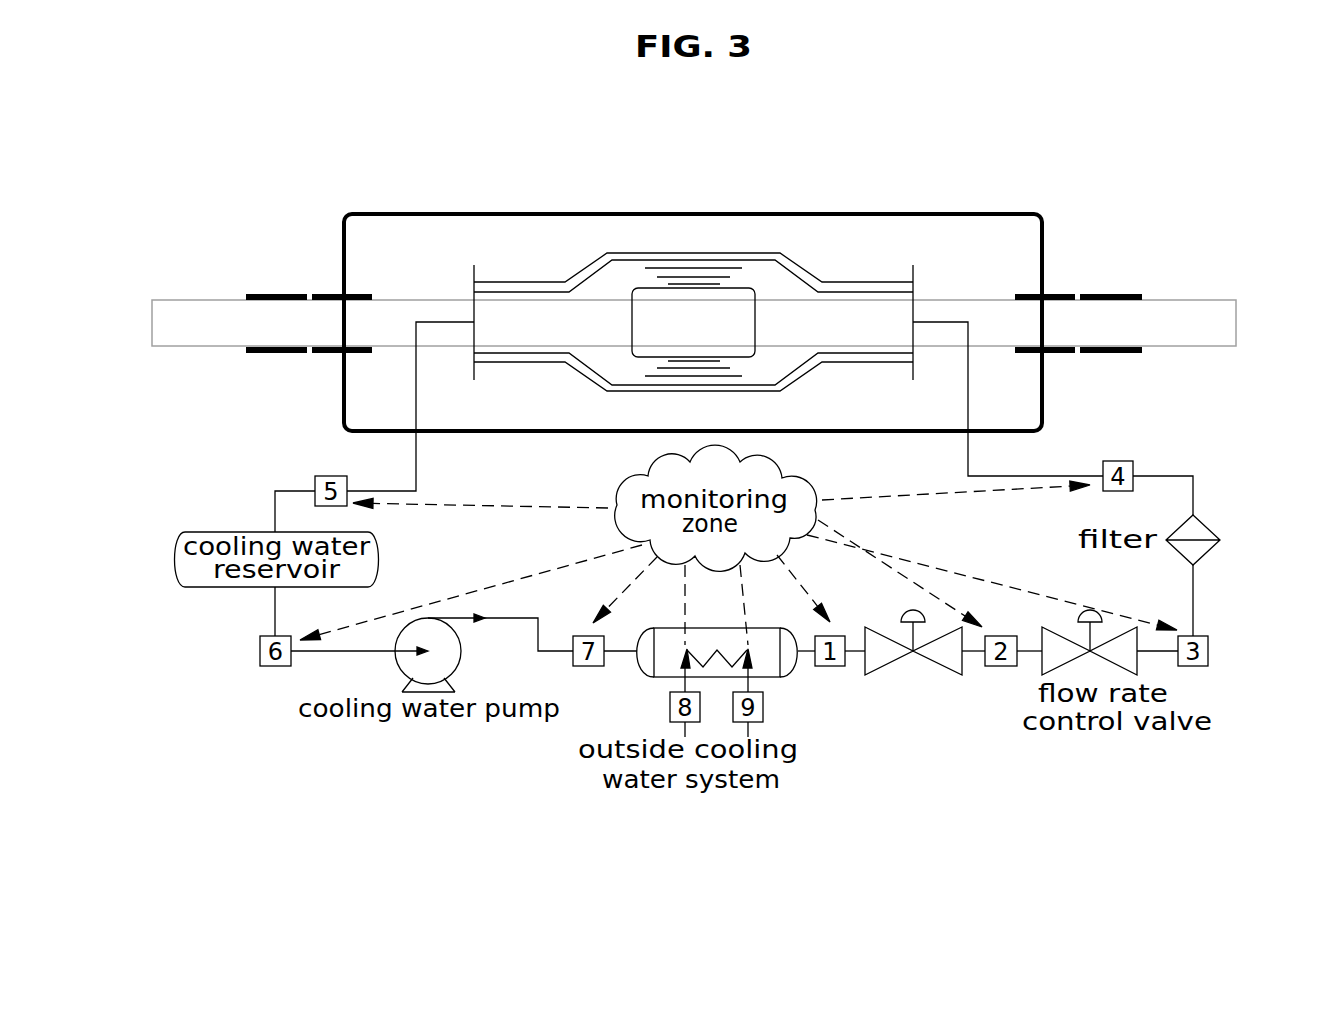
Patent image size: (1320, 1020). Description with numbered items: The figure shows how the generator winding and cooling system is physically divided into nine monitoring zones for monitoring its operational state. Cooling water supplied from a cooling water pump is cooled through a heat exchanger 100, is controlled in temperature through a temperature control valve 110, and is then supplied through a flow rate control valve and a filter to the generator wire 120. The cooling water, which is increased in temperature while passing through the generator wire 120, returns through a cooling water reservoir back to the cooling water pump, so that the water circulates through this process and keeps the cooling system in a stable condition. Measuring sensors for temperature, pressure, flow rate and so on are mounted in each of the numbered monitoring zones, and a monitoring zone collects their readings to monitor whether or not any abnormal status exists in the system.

The generator wire 120 is at (693, 213).
The heat exchanger 100 is at (796, 672).
The temperature control valve 110 is at (955, 672).